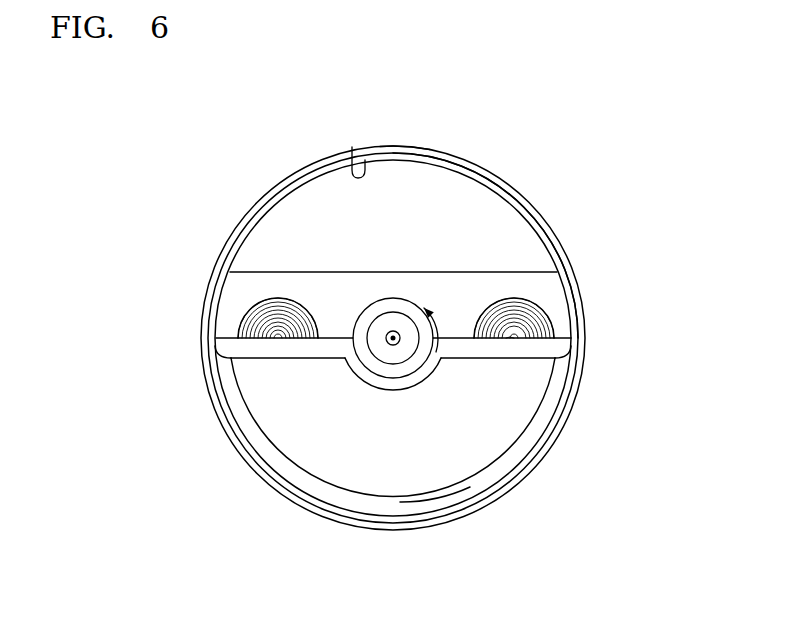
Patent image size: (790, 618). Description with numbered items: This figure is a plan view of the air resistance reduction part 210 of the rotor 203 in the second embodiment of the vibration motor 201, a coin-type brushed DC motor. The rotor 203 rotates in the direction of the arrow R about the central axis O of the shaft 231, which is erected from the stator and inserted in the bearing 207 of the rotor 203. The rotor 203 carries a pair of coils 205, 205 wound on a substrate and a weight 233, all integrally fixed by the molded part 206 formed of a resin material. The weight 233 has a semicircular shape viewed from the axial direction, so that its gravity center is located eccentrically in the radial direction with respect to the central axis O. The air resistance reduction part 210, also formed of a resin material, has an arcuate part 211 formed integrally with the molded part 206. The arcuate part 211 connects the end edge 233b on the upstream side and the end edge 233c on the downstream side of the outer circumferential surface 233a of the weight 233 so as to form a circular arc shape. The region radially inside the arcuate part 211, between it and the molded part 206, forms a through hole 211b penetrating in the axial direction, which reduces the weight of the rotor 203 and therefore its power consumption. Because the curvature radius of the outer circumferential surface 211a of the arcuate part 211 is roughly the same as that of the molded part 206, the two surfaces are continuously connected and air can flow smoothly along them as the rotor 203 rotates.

The vibration motor 201 is at (252, 152).
The rotor 203 is at (565, 232).
The coil 205 is at (243, 319).
The molded part 206 is at (498, 482).
The bearing 207 is at (407, 355).
The air resistance reduction part 210 is at (543, 210).
The arcuate part 211 is at (501, 184).
The outer circumferential surface of the arcuate part 211a is at (417, 147).
The through hole 211b is at (352, 160).
The shaft 231 is at (393, 346).
The weight 233 is at (515, 413).
The outer circumferential surface of the weight 233a is at (438, 500).
The end edge on the upstream side 233b is at (560, 352).
The end edge on the downstream side 233c is at (226, 356).
The central axis O is at (393, 338).
The rotational direction R is at (435, 325).